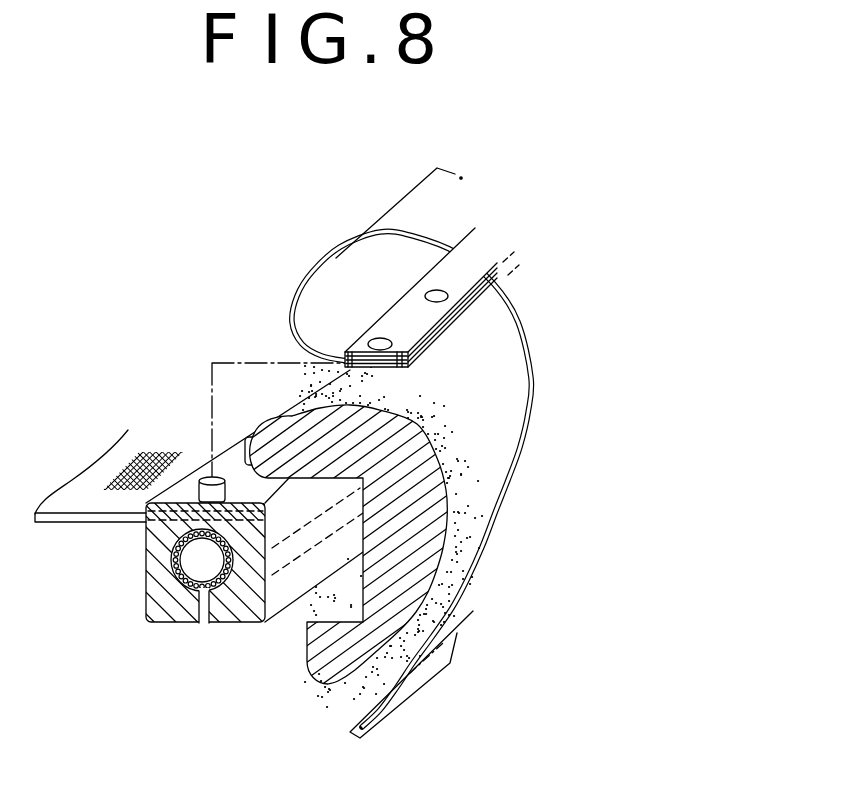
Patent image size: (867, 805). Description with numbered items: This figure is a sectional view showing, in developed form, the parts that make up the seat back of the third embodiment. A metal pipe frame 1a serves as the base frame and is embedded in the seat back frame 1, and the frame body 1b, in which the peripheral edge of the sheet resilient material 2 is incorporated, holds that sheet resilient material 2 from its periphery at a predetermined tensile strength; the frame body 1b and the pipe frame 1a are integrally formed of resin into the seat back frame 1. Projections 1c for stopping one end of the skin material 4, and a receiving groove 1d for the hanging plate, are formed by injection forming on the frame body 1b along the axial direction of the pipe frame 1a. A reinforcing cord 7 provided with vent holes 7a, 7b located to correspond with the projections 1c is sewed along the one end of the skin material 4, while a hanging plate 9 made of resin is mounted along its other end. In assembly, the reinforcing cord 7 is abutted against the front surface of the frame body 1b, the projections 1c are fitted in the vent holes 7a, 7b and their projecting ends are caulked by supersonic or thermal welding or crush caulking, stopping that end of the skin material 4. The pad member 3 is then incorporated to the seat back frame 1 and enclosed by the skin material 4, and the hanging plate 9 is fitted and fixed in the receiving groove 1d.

The seat back frame 1 is at (146, 584).
The metal pipe frame 1a is at (178, 585).
The frame body 1b is at (144, 538).
The projections 1c is at (256, 437).
The receiving groove 1d is at (203, 624).
The sheet resilient material 2 is at (80, 474).
The pad member 3 is at (307, 671).
The skin material 4 is at (388, 214).
The reinforcing cord 7 is at (466, 290).
The vent hole 7a is at (376, 340).
The vent hole 7b is at (434, 291).
The hanging plate 9 is at (358, 723).